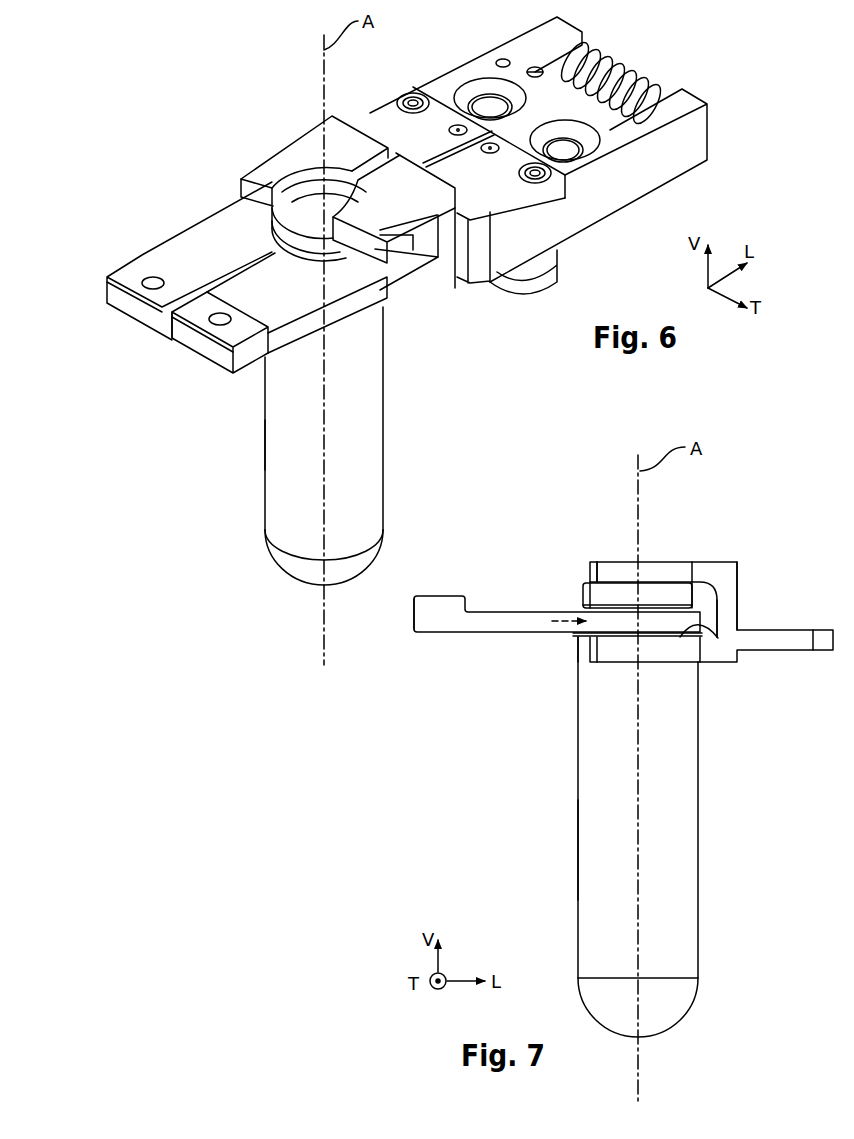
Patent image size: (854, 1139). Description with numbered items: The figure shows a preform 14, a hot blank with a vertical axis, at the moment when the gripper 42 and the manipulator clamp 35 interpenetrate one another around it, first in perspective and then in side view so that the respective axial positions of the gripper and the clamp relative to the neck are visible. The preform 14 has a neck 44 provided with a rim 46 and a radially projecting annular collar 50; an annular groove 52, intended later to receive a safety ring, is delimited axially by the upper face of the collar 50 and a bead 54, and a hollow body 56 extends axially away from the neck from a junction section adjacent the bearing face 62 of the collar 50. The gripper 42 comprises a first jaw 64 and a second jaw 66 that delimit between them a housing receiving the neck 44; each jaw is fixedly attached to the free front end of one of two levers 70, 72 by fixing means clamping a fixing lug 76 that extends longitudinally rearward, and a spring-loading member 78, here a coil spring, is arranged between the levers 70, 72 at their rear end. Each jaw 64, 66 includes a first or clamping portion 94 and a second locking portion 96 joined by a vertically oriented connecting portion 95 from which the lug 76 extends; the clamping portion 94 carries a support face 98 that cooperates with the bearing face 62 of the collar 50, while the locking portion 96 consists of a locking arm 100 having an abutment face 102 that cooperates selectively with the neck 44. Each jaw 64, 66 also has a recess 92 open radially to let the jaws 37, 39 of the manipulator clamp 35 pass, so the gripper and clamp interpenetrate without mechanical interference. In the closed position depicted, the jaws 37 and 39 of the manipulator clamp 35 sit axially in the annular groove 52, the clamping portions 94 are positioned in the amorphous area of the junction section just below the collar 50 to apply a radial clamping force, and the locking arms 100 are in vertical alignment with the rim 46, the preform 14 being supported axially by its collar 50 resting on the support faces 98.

In FIG. 6, the preform 14 is at (368, 490).
In FIG. 7, the preform 14 is at (668, 837).
In FIG. 6, the manipulator clamp 35 is at (196, 343).
In FIG. 7, the manipulator clamp 35 is at (448, 592).
In FIG. 6, the jaw of the manipulator clamp 37 is at (200, 263).
In FIG. 6, the jaw of the manipulator clamp 39 is at (283, 318).
In FIG. 7, the jaw of the manipulator clamp 39 is at (487, 632).
In FIG. 6, the gripper 42 is at (357, 148).
In FIG. 7, the gripper 42 is at (790, 567).
In FIG. 6, the neck 44 is at (272, 238).
In FIG. 7, the neck 44 is at (586, 597).
In FIG. 6, the rim 46 is at (272, 210).
In FIG. 7, the rim 46 is at (590, 598).
In FIG. 7, the annular collar 50 is at (565, 649).
In FIG. 6, the annular groove 52 is at (281, 257).
In FIG. 7, the annular groove 52 is at (552, 621).
In FIG. 6, the bead 54 is at (322, 262).
In FIG. 7, the bead 54 is at (690, 606).
In FIG. 6, the hollow body 56 is at (383, 398).
In FIG. 7, the hollow body 56 is at (590, 808).
In FIG. 7, the bearing face 62 is at (718, 640).
In FIG. 6, the first jaw 64 is at (305, 155).
In FIG. 6, the second jaw 66 is at (410, 116).
In FIG. 7, the second jaw 66 is at (736, 550).
In FIG. 6, the lever 70 is at (486, 72).
In FIG. 6, the lever 72 is at (598, 195).
In FIG. 7, the fixing lug 76 is at (787, 637).
In FIG. 6, the spring-loading member 78 is at (622, 80).
In FIG. 6, the recess 92 is at (422, 262).
In FIG. 6, the first or clamping portion 94 is at (400, 292).
In FIG. 7, the first or clamping portion 94 is at (620, 652).
In FIG. 7, the connecting portion 95 is at (728, 607).
In FIG. 6, the second locking portion 96 is at (460, 280).
In FIG. 7, the second locking portion 96 is at (612, 570).
In FIG. 7, the support face 98 is at (670, 648).
In FIG. 6, the locking arm 100 is at (560, 272).
In FIG. 7, the locking arm 100 is at (680, 572).
In FIG. 7, the abutment face 102 is at (661, 590).